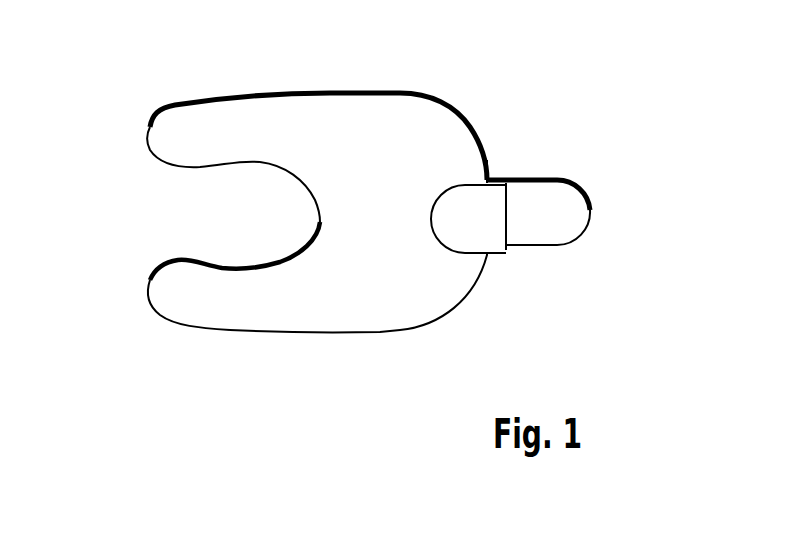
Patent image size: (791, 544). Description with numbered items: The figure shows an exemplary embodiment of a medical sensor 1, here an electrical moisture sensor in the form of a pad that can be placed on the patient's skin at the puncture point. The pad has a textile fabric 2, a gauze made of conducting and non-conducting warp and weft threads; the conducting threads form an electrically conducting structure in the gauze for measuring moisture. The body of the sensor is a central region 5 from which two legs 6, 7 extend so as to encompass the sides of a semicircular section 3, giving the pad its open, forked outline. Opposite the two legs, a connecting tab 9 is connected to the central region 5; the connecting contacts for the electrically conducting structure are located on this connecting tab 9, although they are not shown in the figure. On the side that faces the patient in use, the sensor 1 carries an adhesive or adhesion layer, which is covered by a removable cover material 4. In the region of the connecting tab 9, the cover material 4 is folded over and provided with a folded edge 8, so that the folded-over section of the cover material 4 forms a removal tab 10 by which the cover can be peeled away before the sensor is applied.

The medical sensor 1 is at (240, 54).
The textile fabric 2 is at (434, 98).
The semicircular section 3 is at (256, 208).
The cover material 4 is at (302, 323).
The central region 5 is at (380, 220).
The leg 6 is at (175, 288).
The leg 7 is at (173, 142).
The folded edge 8 is at (508, 213).
The connecting tab 9 is at (563, 227).
The removal tab 10 is at (492, 233).